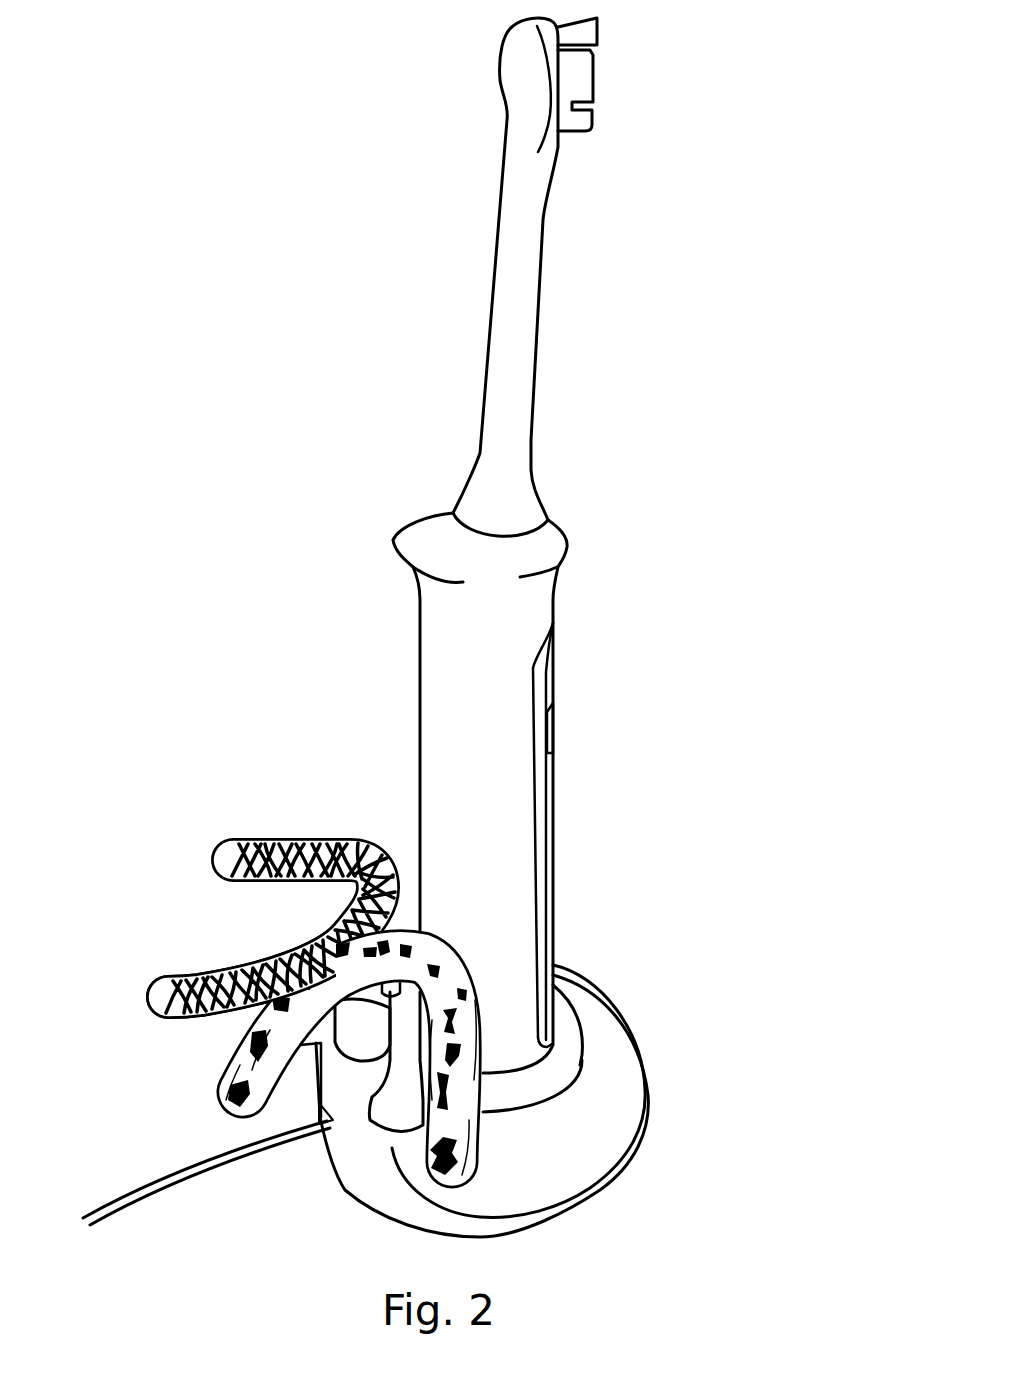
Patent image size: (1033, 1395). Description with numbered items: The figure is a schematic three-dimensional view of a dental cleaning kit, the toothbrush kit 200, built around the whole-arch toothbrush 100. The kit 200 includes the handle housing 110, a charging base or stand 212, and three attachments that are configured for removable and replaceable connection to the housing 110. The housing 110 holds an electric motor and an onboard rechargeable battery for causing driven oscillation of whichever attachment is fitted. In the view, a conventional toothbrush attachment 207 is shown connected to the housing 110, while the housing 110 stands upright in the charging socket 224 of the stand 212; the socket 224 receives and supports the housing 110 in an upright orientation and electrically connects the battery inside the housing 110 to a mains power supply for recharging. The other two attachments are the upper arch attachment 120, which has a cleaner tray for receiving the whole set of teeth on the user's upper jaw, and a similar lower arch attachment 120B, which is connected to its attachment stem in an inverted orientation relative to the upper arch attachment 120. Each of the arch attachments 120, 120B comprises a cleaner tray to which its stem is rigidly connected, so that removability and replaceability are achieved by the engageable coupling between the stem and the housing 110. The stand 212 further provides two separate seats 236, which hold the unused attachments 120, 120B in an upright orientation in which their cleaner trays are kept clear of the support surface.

The toothbrush kit 200 is at (248, 207).
The whole-arch toothbrush 100 is at (583, 531).
The conventional toothbrush attachment 207 is at (530, 248).
The housing 110 is at (443, 668).
The upper arch attachment 120 is at (228, 819).
The lower arch attachment 120B is at (482, 968).
The charging base or stand 212 is at (620, 1033).
The charging socket 224 is at (510, 1069).
The seats 236 is at (344, 1052).